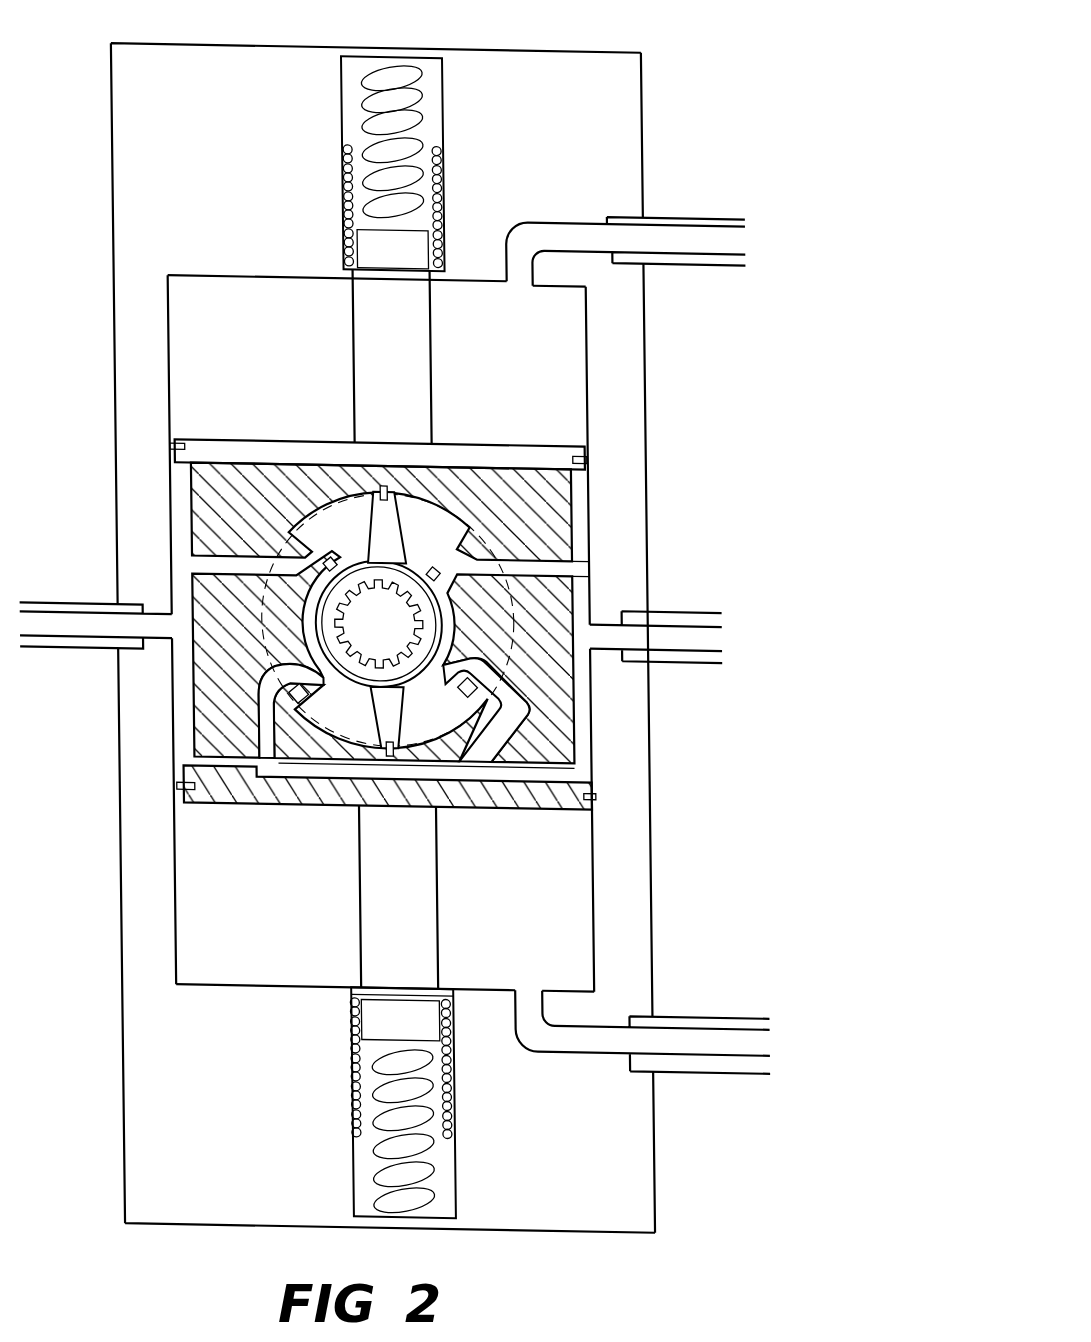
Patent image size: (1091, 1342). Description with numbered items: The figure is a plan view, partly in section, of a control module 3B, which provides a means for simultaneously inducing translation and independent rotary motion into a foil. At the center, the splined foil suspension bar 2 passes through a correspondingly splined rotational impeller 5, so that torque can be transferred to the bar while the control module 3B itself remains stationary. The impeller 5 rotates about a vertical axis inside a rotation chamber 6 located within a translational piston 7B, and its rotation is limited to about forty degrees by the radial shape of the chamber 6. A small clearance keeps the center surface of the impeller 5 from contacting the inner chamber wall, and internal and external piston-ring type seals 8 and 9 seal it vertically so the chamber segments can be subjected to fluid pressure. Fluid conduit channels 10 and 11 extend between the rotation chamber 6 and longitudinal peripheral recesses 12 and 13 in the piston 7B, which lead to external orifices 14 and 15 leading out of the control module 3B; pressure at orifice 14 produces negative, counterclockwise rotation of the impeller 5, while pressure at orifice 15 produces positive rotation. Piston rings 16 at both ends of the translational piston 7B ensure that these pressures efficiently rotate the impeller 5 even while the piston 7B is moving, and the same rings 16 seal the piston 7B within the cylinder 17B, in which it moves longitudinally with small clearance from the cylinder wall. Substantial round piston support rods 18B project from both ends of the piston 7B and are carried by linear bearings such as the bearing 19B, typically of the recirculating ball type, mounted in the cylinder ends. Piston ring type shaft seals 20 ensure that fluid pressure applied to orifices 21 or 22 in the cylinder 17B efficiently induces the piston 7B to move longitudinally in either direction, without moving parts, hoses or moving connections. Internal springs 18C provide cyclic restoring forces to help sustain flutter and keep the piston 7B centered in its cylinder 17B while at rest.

The control module 3B is at (649, 30).
The foil suspension bar 2 is at (362, 603).
The rotational impeller 5 is at (372, 718).
The rotation chamber 6 is at (299, 708).
The translational piston 7B is at (562, 730).
The internal piston-ring type seal 8 is at (443, 512).
The external piston-ring type seal 9 is at (383, 488).
The fluid conduit channel 10 is at (544, 565).
The fluid conduit channel 11 is at (214, 571).
The longitudinal peripheral recess 12 is at (594, 486).
The longitudinal peripheral recess 13 is at (185, 523).
The external orifice 14 is at (704, 627).
The external orifice 15 is at (45, 626).
The piston rings 16 is at (594, 787).
The cylinder 17B is at (612, 916).
The piston support rods 18B is at (376, 332).
The internal springs 18C is at (362, 121).
The linear bearing 19B is at (345, 1097).
The piston ring type shaft seals 20 is at (349, 1000).
The orifice 21 is at (725, 229).
The orifice 22 is at (733, 1049).